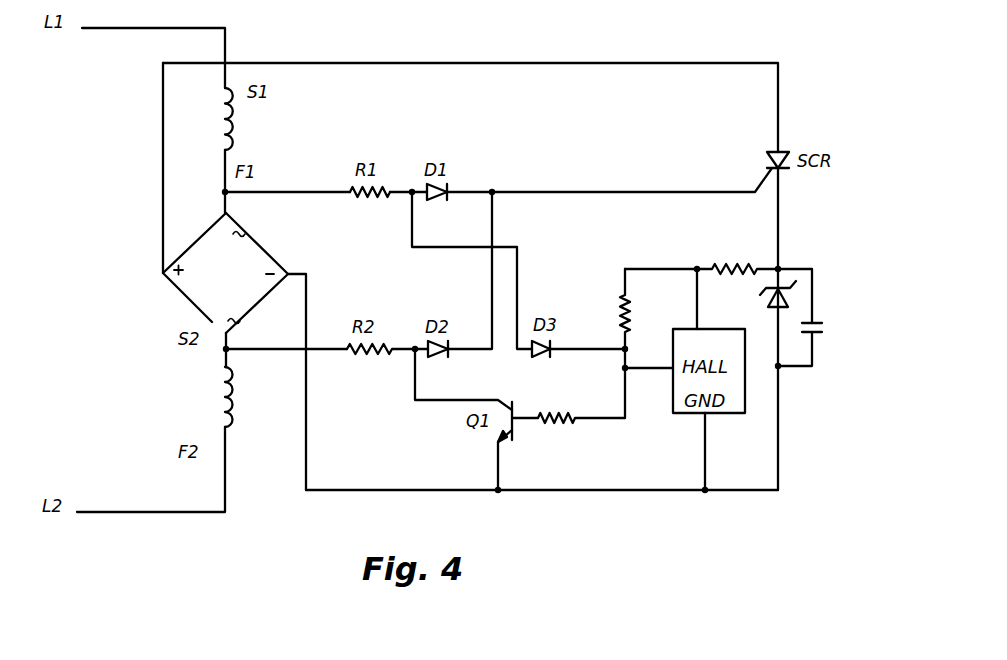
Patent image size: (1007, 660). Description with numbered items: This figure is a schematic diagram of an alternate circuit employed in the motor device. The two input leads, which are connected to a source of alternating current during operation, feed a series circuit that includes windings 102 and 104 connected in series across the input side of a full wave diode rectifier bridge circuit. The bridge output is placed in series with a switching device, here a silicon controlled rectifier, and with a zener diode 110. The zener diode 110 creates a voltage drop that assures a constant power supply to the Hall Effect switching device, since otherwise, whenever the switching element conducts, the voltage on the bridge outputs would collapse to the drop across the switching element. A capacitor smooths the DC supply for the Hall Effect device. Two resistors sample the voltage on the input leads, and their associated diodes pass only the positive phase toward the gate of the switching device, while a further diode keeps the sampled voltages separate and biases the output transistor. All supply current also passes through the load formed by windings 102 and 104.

The winding 102 is at (233, 123).
The winding 104 is at (233, 402).
The zener diode 110 is at (786, 297).